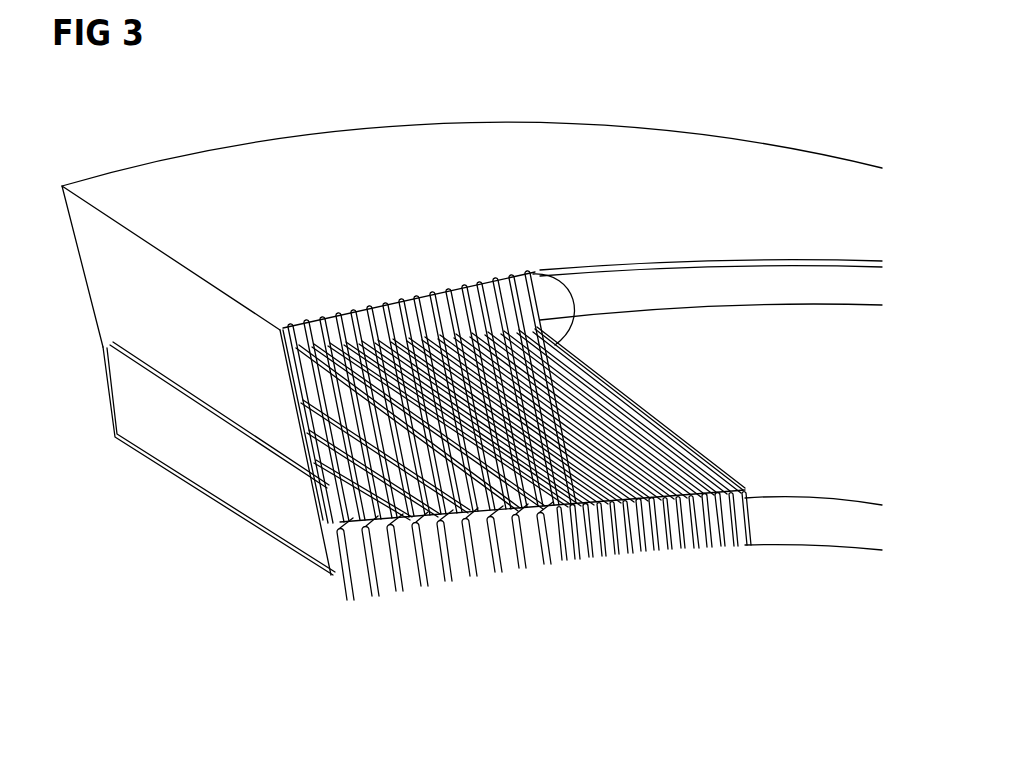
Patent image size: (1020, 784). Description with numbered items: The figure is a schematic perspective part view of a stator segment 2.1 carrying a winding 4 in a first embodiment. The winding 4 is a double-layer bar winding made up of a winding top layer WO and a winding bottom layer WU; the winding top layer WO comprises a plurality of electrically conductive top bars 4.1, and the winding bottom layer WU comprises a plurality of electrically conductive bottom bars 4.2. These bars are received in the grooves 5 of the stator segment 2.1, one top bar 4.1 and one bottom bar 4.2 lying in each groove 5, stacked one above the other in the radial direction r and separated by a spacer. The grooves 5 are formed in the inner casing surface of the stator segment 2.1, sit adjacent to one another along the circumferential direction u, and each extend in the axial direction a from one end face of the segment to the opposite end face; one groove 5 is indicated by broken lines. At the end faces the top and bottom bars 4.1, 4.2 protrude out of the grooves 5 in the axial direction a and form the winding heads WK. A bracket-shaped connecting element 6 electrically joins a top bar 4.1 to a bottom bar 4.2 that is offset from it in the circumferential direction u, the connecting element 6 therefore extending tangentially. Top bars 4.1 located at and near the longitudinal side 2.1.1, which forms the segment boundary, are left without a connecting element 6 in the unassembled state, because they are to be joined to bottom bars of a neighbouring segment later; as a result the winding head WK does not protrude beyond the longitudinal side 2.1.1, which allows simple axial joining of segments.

The stator segment 2.1 is at (395, 170).
The longitudinal side 2.1.1 is at (113, 256).
The winding 4 is at (686, 440).
The top bar 4.1 is at (497, 557).
The bottom bar 4.2 is at (306, 342).
The groove 5 is at (136, 378).
The connecting element 6 is at (573, 335).
The winding head WK is at (630, 380).
The winding top layer WO is at (523, 565).
The winding bottom layer WU is at (312, 423).
The circumferential direction u is at (745, 122).
The radial direction r is at (59, 383).
The axial direction a is at (110, 498).